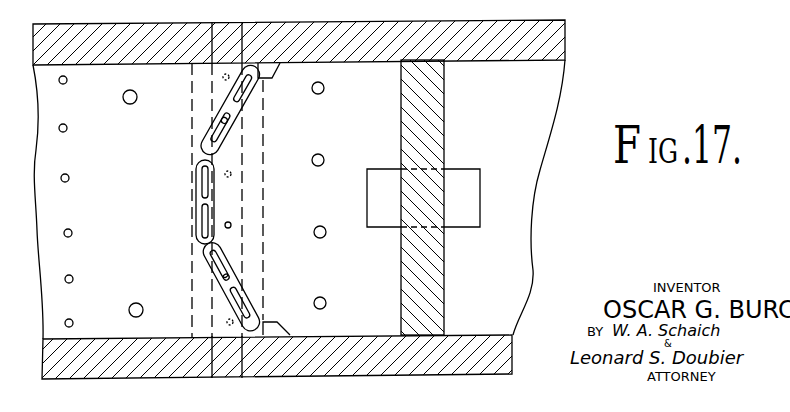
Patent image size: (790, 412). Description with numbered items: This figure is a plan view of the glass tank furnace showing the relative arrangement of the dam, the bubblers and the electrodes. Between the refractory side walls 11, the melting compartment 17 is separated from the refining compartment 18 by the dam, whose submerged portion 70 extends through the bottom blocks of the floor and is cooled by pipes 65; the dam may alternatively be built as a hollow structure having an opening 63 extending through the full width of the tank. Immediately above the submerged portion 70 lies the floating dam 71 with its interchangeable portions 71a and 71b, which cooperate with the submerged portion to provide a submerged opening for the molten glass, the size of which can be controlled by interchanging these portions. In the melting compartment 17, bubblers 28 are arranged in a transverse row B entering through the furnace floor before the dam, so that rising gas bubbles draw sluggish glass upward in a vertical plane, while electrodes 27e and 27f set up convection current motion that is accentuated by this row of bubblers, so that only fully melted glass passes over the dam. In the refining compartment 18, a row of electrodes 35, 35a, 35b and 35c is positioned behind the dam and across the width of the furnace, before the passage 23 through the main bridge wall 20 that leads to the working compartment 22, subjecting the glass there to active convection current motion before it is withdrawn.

The side walls 11 is at (468, 33).
The melting compartment 17 is at (152, 192).
The refining compartment 18 is at (331, 198).
The main bridge wall 20 is at (441, 107).
The working compartment 22 is at (526, 184).
The passage 23 is at (461, 178).
The electrode 27e is at (136, 303).
The electrode 27f is at (123, 100).
The bubblers 28 is at (70, 229).
The electrode 35 is at (327, 302).
The electrode 35a is at (326, 236).
The electrode 35b is at (324, 158).
The electrode 35c is at (325, 88).
The opening 63 is at (237, 35).
The pipes 65 is at (235, 225).
The submerged portion 70 is at (264, 148).
The floating dam 71 is at (214, 205).
The floating dam portion 71a is at (240, 118).
The floating dam portion 71b is at (240, 288).
The row of bubblers B is at (64, 76).